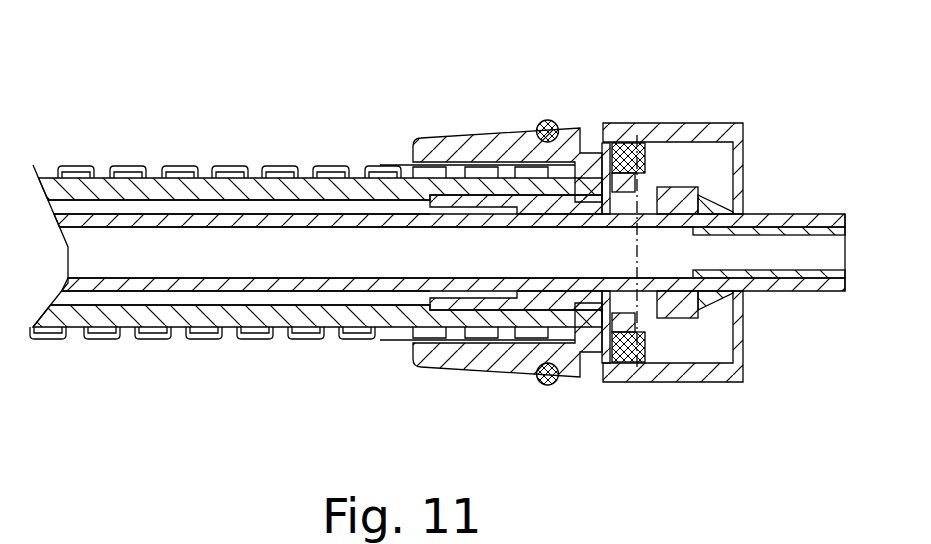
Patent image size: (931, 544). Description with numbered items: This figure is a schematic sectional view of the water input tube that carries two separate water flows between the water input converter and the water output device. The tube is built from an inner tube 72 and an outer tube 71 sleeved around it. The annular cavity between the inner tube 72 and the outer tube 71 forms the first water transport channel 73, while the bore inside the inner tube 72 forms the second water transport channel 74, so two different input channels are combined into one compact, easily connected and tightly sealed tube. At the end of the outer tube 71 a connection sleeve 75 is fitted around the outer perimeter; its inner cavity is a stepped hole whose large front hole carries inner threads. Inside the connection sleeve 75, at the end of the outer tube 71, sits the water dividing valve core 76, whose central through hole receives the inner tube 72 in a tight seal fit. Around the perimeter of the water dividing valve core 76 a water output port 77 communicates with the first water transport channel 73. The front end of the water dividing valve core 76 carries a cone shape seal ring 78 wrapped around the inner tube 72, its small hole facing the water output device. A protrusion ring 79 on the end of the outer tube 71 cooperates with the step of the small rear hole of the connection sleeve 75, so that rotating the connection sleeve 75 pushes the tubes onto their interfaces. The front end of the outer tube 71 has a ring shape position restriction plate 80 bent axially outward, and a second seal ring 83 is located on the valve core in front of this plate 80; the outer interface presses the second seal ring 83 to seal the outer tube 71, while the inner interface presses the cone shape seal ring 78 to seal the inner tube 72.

The outer tube 71 is at (150, 187).
The inner tube 72 is at (177, 283).
The first water transport channel 73 is at (167, 240).
The second water transport channel 74 is at (195, 207).
The connection sleeve 75 is at (498, 142).
The water dividing valve core 76 is at (667, 307).
The water output port 77 is at (645, 200).
The cone shape seal ring 78 is at (707, 203).
The protrusion ring 79 is at (593, 372).
The ring shape position restriction plate 80 is at (605, 152).
The second seal ring 83 is at (628, 360).